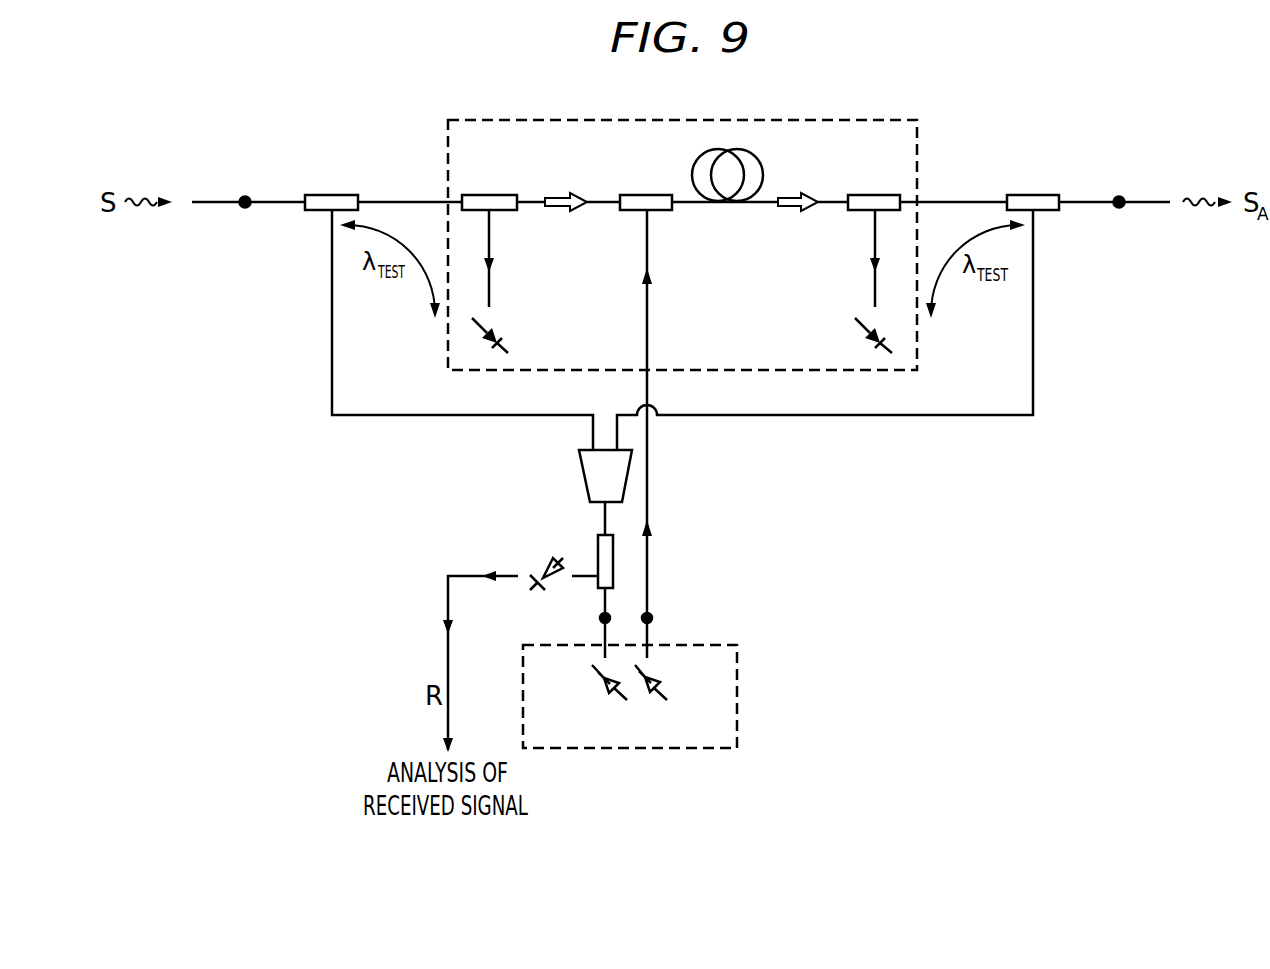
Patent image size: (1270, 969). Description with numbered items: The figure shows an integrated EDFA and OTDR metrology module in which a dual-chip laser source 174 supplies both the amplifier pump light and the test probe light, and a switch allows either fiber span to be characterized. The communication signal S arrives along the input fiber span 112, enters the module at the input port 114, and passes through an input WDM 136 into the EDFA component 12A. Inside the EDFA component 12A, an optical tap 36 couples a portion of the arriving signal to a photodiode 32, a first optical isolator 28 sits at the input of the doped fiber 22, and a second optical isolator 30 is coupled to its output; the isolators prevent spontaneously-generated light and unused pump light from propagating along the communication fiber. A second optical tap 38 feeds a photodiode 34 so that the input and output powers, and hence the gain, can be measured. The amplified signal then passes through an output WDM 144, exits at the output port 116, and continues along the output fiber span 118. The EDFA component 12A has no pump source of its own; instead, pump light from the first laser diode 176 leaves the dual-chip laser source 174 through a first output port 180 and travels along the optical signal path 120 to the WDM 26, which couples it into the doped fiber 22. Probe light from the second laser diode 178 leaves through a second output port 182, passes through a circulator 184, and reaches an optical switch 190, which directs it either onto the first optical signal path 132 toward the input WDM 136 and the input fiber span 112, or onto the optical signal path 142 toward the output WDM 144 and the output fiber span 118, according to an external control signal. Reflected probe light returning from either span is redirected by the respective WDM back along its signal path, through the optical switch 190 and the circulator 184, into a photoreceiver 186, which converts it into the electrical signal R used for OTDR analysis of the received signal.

The EDFA component 12A is at (578, 106).
The doped fiber 22 is at (760, 165).
The WDM 26 is at (652, 195).
The first optical isolator 28 is at (560, 214).
The second optical isolator 30 is at (792, 214).
The photodiode 32 is at (500, 336).
The photodiode 34 is at (854, 332).
The optical tap 36 is at (494, 195).
The optical tap 38 is at (878, 195).
The input fiber span 112 is at (222, 198).
The input port 114 is at (238, 213).
The output port 116 is at (1126, 212).
The output fiber span 118 is at (1147, 197).
The optical signal path 120 is at (650, 472).
The first optical signal path 132 is at (328, 367).
The input WDM 136 is at (331, 195).
The optical signal path 142 is at (1035, 368).
The output WDM 144 is at (1035, 195).
The dual-chip laser source 174 is at (664, 696).
The first laser diode 176 is at (647, 702).
The second laser diode 178 is at (603, 702).
The first output port 180 is at (652, 618).
The second output port 182 is at (601, 618).
The circulator 184 is at (596, 548).
The photoreceiver 186 is at (538, 574).
The optical switch 190 is at (580, 471).